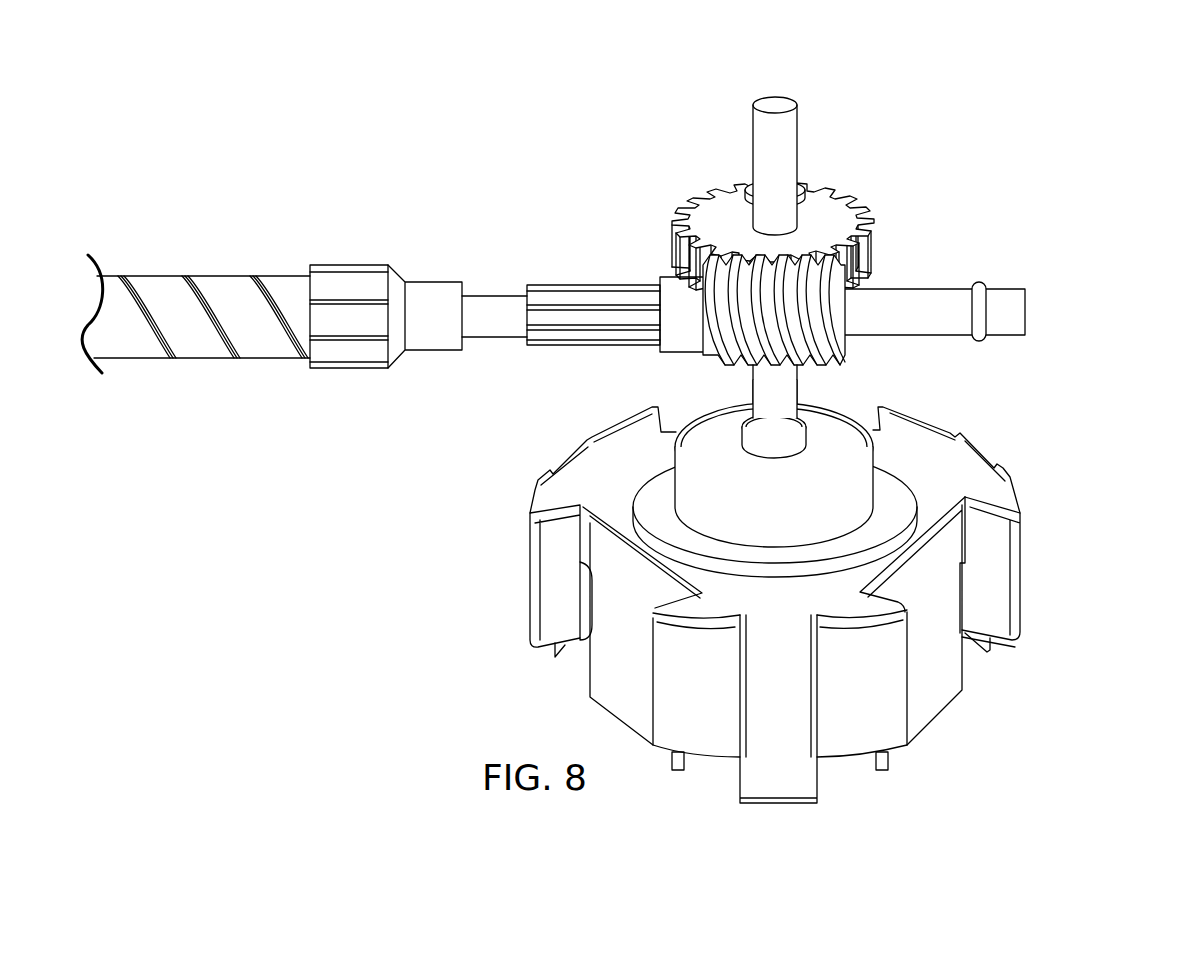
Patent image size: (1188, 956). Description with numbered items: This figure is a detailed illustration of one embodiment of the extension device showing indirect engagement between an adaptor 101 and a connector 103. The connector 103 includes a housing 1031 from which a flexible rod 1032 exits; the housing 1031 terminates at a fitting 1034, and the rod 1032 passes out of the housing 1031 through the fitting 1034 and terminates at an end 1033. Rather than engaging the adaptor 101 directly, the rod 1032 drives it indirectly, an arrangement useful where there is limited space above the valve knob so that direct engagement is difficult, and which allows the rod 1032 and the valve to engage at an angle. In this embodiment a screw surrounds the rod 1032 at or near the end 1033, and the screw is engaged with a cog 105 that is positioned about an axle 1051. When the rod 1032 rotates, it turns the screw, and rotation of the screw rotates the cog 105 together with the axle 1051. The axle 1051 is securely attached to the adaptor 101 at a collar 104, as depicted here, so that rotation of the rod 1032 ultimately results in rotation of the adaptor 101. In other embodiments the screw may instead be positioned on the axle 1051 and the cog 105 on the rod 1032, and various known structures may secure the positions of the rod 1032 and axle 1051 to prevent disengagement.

The adaptor 101 is at (1003, 440).
The connector 103 is at (318, 180).
The housing 1031 is at (185, 348).
The rod 1032 is at (495, 333).
The end 1033 is at (1038, 308).
The fitting 1034 is at (333, 265).
The collar 104 is at (793, 442).
The cog 105 is at (868, 214).
The axle 1051 is at (789, 135).